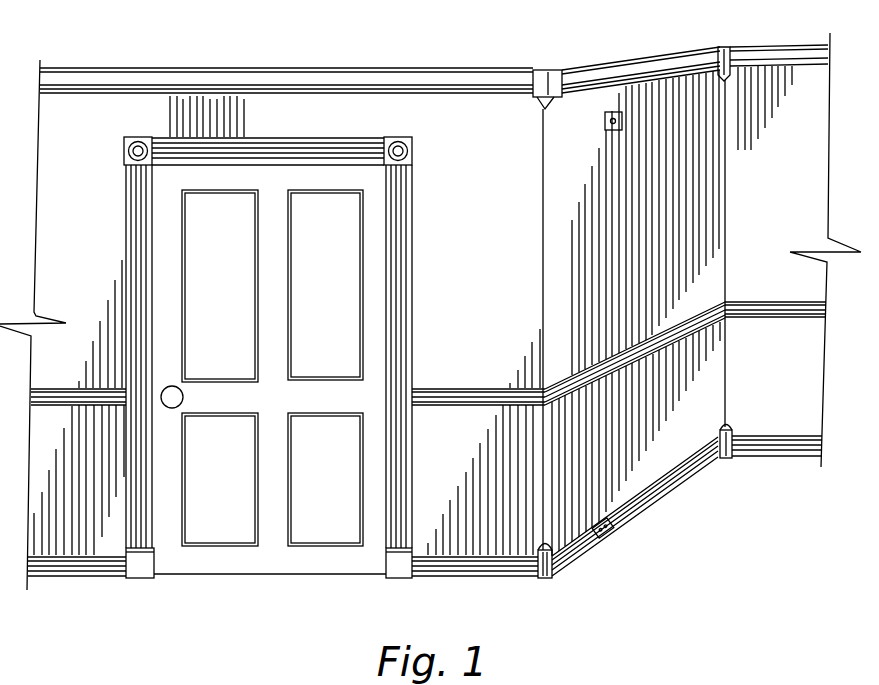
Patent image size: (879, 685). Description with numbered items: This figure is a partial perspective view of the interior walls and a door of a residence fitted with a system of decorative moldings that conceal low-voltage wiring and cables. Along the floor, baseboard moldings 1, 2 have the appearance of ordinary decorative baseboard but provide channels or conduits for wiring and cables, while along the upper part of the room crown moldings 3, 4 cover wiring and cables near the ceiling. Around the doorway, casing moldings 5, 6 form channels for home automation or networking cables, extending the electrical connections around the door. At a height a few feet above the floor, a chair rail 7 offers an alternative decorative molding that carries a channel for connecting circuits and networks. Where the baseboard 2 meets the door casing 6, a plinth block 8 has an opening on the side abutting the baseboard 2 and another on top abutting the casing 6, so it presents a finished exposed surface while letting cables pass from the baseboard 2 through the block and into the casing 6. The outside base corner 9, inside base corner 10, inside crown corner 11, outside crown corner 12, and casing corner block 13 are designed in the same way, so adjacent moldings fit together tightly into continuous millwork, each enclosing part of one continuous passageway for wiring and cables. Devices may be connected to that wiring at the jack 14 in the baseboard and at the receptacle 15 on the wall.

The baseboard molding 1 is at (665, 500).
The baseboard molding 2 is at (482, 579).
The crown molding 3 is at (440, 70).
The crown molding 4 is at (628, 60).
The casing molding 5 is at (338, 137).
The casing molding 6 is at (413, 230).
The chair rail 7 is at (703, 328).
The plinth block 8 is at (393, 579).
The outside base corner 9 is at (547, 579).
The inside base corner 10 is at (728, 460).
The inside crown corner 11 is at (722, 76).
The outside crown corner 12 is at (538, 104).
The casing corner block 13 is at (124, 140).
The jack 14 is at (612, 540).
The receptacle 15 is at (605, 120).